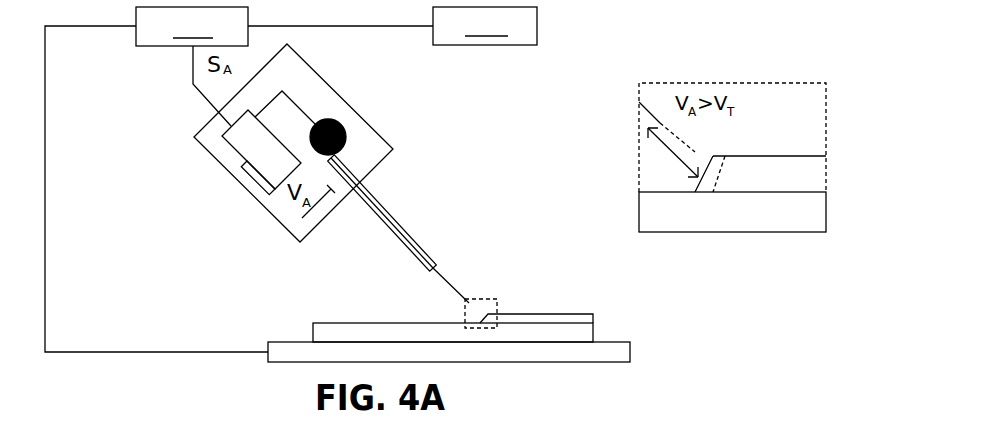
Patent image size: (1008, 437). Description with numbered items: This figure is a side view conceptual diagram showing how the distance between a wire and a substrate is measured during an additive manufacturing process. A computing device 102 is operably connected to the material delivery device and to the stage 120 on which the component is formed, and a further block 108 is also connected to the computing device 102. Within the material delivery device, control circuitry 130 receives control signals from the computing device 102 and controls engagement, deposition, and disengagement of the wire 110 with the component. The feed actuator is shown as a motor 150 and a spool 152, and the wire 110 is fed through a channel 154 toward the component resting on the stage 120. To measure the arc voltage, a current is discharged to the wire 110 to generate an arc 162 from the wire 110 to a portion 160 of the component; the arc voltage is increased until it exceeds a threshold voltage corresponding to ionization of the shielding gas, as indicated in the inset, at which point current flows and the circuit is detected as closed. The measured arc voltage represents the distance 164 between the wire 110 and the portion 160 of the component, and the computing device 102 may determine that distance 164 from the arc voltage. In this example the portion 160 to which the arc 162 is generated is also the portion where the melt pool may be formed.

The computing device 102 is at (192, 26).
The power supply 108 is at (485, 26).
The control circuitry 130 is at (223, 128).
The motor 150 is at (346, 129).
The spool 152 is at (329, 119).
The channel 154 is at (378, 196).
The wire 110 is at (440, 275).
The stage 120 is at (621, 356).
The portion of component 160 is at (725, 167).
The arc 162 is at (697, 152).
The distance 164 is at (682, 165).